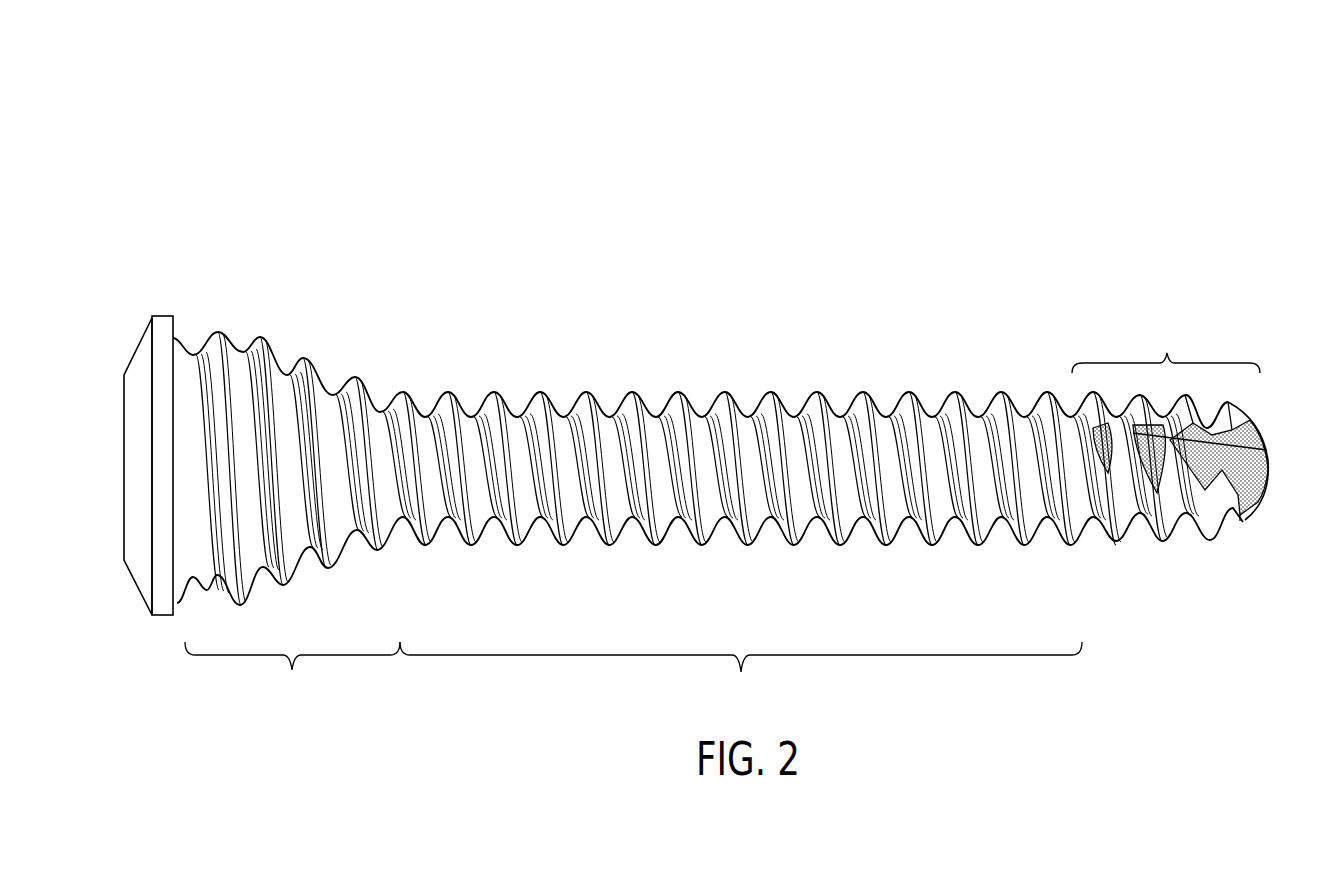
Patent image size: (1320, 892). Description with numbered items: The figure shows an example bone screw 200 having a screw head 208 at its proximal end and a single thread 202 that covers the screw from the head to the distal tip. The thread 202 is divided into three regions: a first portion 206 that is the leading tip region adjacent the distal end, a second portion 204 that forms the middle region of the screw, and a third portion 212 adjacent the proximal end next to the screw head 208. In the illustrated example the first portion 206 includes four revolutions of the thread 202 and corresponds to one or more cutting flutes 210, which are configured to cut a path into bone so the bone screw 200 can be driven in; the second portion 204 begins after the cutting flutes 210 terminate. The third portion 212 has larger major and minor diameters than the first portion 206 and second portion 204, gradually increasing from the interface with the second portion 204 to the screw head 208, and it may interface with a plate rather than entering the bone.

The bone screw 200 is at (1206, 172).
The threads 202 is at (632, 391).
The second portion 204 is at (741, 677).
The first portion 206 is at (1166, 344).
The screw head 208 is at (152, 338).
The cutting flutes 210 is at (1247, 468).
The third portion 212 is at (292, 676).